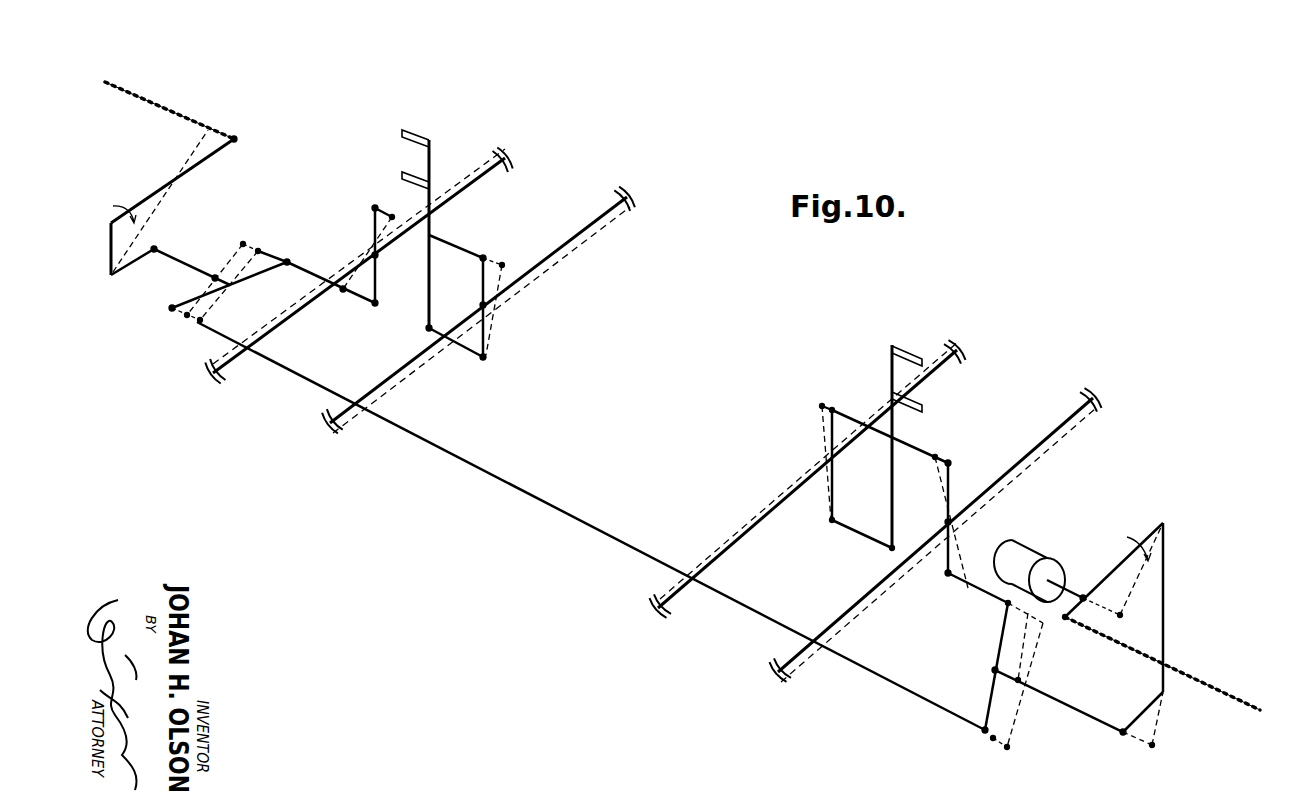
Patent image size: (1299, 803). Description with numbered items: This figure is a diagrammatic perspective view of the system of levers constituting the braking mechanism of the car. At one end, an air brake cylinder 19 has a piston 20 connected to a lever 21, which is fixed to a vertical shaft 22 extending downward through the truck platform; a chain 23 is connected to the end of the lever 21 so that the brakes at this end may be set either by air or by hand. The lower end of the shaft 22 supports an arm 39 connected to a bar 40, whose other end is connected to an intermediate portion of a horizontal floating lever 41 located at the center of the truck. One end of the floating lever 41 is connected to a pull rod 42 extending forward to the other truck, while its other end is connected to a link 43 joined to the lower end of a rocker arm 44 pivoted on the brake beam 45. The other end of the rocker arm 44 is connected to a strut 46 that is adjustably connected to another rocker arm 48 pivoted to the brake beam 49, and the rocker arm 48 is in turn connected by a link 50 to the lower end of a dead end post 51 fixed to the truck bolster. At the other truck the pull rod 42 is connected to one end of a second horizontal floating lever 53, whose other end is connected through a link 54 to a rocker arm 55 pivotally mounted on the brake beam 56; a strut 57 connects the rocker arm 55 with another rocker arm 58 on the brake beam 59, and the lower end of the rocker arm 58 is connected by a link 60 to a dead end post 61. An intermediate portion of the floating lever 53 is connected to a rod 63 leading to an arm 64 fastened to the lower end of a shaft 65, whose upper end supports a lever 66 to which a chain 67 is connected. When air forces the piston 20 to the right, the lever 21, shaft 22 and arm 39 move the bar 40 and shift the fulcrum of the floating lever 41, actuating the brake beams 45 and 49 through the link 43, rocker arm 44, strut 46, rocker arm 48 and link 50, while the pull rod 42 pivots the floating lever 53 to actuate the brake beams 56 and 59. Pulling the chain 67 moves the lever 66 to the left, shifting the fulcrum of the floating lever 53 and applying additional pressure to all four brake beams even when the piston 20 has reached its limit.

The brake cylinder 19 is at (1030, 556).
The piston 20 is at (1066, 590).
The lever 21 is at (1118, 563).
The vertical shaft 22 is at (1167, 600).
The chain 23 is at (1198, 678).
The arm 39 is at (1145, 710).
The bar 40 is at (1073, 706).
The horizontal floating lever 41 is at (1002, 638).
The pull rod 42 is at (541, 500).
The link 43 is at (975, 588).
The rocker arm 44 is at (949, 483).
The brake beam 45 is at (1060, 426).
The strut 46 is at (918, 448).
The rocker arm 48 is at (834, 469).
The brake beam 49 is at (779, 507).
The link 50 is at (873, 540).
The dead end post 51 is at (894, 482).
The second horizontal floating lever 53 is at (262, 273).
The link 54 is at (323, 277).
The rocker arm 55 is at (373, 210).
The brake beam 56 is at (302, 308).
The strut 57 is at (458, 246).
The rocker arm 58 is at (482, 278).
The brake beam 59 is at (552, 253).
The link 60 is at (468, 348).
The dead end post 61 is at (428, 258).
The rod 63 is at (193, 266).
The arm 64 is at (136, 262).
The shaft 65 is at (112, 237).
The lever 66 is at (205, 160).
The chain 67 is at (181, 113).